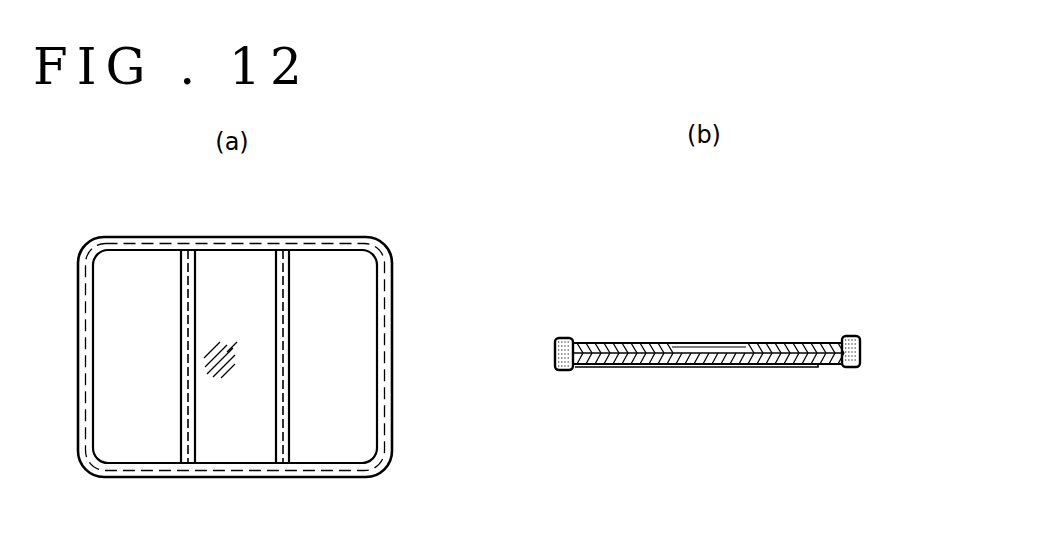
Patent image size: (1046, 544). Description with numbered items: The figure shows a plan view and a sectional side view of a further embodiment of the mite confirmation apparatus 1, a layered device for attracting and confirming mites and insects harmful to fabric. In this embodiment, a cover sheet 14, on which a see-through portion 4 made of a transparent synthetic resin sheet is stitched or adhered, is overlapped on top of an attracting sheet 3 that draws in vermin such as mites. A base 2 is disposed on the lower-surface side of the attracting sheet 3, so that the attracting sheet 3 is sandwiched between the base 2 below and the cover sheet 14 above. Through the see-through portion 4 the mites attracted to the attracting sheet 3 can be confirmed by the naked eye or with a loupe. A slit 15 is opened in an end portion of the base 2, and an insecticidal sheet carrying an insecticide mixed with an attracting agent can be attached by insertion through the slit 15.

The mite confirmation apparatus 1 is at (95, 242).
The base 2 is at (710, 366).
The attracting sheet 3 is at (222, 266).
The see-through portion 4 is at (258, 268).
The cover sheet 14 is at (363, 263).
The slit 15 is at (820, 366).